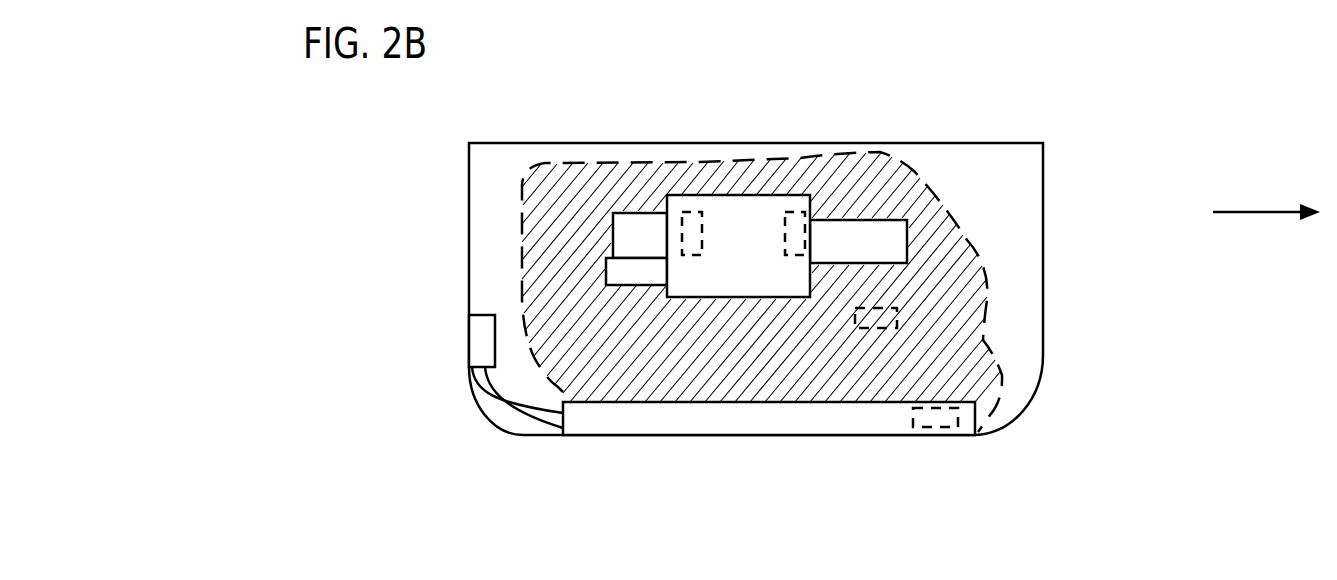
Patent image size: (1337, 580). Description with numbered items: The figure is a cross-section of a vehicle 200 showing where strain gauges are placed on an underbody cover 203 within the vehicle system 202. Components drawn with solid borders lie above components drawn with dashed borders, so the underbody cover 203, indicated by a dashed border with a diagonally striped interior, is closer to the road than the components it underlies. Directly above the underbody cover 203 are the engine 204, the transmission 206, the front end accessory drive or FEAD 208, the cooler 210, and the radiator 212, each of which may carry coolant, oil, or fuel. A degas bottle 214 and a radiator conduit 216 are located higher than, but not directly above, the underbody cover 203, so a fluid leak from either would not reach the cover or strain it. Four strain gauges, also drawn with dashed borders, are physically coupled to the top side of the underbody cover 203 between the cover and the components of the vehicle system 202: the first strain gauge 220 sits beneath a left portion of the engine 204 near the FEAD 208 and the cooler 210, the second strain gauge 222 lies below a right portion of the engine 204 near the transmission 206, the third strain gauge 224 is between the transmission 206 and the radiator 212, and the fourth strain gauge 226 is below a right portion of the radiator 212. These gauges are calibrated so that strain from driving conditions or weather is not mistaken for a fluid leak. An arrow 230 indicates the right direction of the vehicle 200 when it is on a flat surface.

The vehicle 200 is at (408, 93).
The vehicle system 202 is at (968, 99).
The underbody cover 203 is at (947, 211).
The engine 204 is at (752, 256).
The transmission 206 is at (872, 251).
The front end accessory drive (FEAD) 208 is at (654, 245).
The cooler 210 is at (650, 282).
The radiator 212 is at (782, 427).
The degas bottle 214 is at (485, 345).
The radiator conduit 216 is at (500, 407).
The first strain gauge 220 is at (690, 212).
The second strain gauge 222 is at (788, 212).
The third strain gauge 224 is at (897, 308).
The fourth strain gauge 226 is at (948, 432).
The arrow 230 is at (1232, 210).